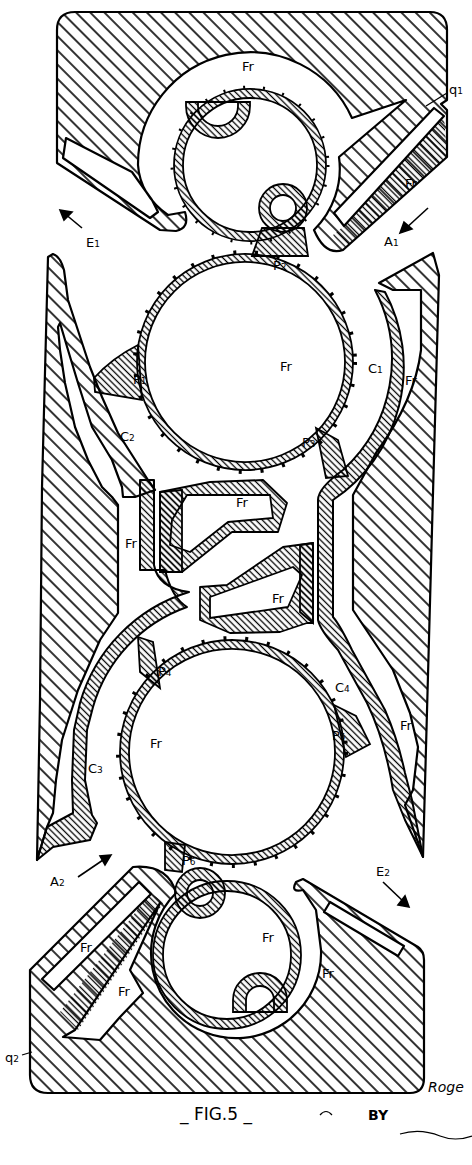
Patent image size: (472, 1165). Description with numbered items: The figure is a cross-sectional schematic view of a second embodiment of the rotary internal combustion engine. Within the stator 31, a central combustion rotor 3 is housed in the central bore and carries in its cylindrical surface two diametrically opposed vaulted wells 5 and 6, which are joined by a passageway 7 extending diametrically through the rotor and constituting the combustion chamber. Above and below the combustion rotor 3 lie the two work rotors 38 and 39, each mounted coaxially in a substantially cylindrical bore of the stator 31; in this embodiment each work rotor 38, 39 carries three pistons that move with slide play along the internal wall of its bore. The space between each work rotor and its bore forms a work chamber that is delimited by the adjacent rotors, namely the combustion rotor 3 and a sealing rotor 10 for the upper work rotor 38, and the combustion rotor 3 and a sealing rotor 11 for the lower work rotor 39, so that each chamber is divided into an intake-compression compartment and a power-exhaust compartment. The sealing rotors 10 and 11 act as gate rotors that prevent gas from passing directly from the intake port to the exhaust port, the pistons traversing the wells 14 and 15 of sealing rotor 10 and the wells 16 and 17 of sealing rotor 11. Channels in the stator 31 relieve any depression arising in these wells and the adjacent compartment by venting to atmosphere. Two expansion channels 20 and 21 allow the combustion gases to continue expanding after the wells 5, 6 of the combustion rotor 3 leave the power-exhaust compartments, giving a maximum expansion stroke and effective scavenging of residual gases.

The central combustion rotor 3 is at (187, 522).
The vaulted well 5 is at (172, 541).
The vaulted well 6 is at (301, 572).
The passageway 7 is at (241, 567).
The sealing rotor 10 is at (189, 138).
The sealing rotor 11 is at (162, 935).
The well 14 is at (218, 120).
The well 15 is at (280, 220).
The well 16 is at (200, 893).
The well 17 is at (260, 992).
The expansion channel 20 is at (152, 538).
The expansion channel 21 is at (316, 587).
The stator 31 is at (414, 486).
The work rotor 38 is at (163, 288).
The work rotor 39 is at (183, 653).